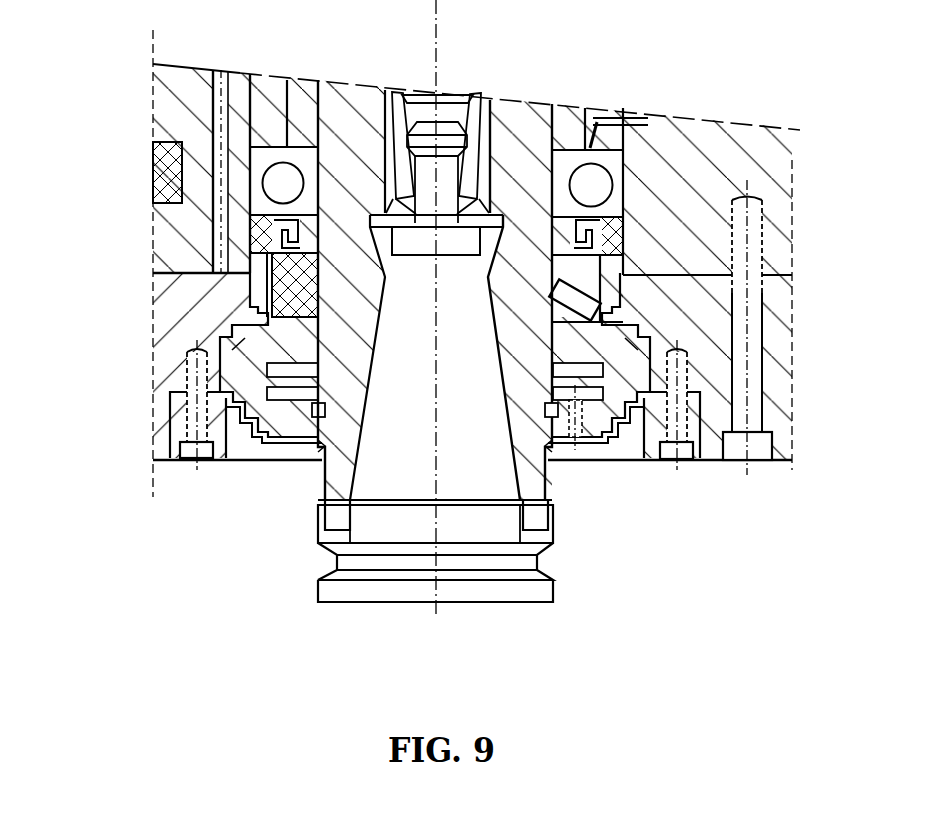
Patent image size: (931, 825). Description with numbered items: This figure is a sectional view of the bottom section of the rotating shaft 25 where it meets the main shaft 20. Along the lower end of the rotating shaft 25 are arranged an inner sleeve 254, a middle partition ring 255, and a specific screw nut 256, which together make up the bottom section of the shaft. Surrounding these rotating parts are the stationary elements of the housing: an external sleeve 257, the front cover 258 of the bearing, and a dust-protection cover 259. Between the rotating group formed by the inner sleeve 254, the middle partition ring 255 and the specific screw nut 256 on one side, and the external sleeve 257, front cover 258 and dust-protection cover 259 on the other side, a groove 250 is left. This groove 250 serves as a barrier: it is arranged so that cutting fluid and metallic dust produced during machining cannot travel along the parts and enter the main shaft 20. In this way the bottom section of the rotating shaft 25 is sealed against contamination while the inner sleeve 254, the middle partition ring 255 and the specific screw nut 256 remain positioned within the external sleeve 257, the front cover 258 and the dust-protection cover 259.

The main shaft 20 is at (627, 512).
The rotating shaft 25 is at (522, 110).
The groove 250 is at (183, 460).
The inner sleeve 254 is at (347, 105).
The middle partition ring 255 is at (275, 284).
The specific screw nut 256 is at (287, 453).
The external sleeve 257 is at (257, 232).
The front cover of the bearing 258 is at (167, 363).
The dust-protection cover 259 is at (235, 450).